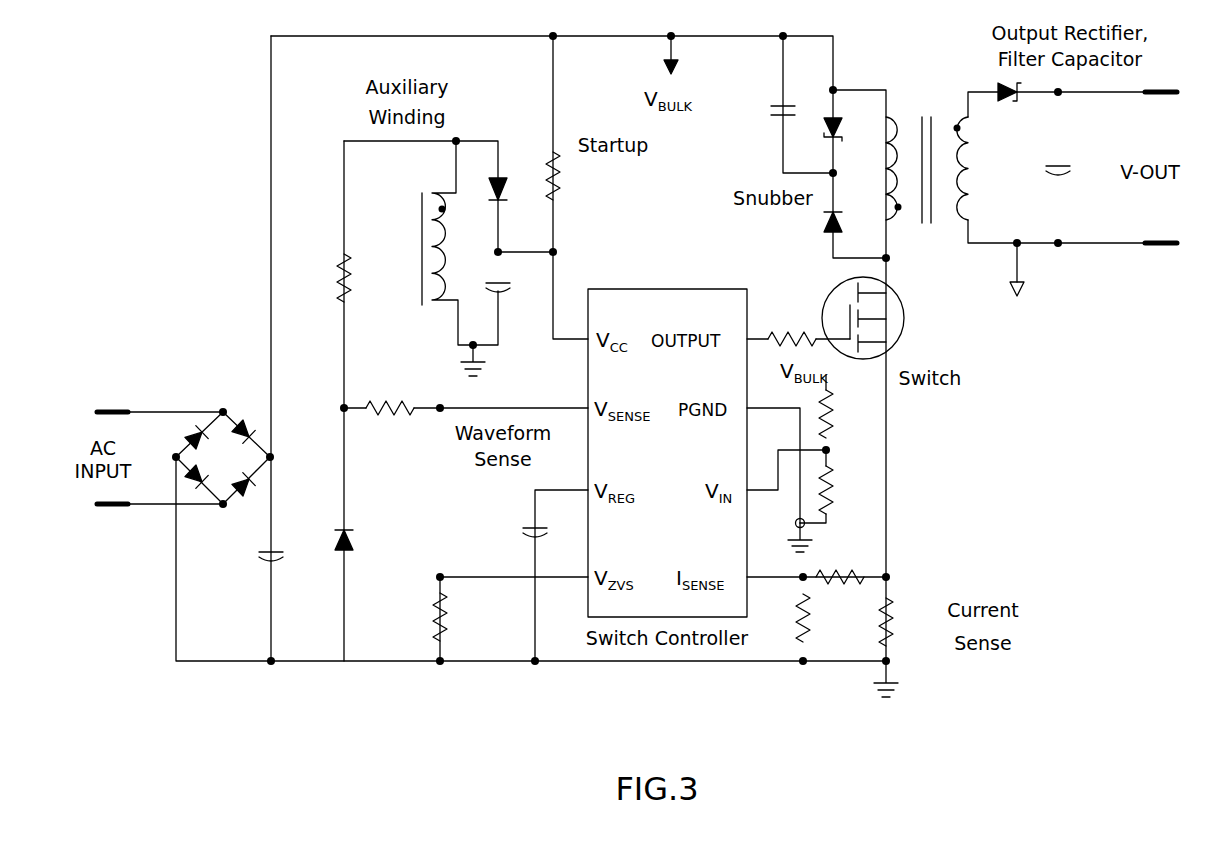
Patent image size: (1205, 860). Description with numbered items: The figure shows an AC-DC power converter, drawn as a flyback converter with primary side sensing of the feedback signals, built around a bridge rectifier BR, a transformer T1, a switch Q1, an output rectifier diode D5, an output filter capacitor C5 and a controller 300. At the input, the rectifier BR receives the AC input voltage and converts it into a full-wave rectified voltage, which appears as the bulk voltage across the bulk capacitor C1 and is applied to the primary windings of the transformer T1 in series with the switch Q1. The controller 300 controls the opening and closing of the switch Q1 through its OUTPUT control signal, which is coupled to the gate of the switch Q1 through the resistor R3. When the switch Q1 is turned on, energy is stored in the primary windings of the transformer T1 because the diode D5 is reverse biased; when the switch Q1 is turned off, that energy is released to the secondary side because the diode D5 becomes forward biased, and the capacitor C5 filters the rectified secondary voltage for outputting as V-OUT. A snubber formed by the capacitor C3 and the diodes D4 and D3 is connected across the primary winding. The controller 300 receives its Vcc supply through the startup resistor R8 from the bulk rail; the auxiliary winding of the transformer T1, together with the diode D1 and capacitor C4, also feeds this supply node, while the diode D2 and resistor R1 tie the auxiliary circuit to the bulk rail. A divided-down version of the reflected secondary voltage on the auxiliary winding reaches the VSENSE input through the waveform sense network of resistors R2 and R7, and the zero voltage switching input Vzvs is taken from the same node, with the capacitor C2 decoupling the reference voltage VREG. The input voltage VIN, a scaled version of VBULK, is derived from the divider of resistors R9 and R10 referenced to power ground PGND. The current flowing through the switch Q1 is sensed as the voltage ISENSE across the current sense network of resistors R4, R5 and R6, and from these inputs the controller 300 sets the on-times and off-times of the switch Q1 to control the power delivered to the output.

The controller 300 is at (661, 289).
The bridge rectifier BR is at (223, 477).
The bulk capacitor C1 is at (286, 572).
The regulator capacitor C2 is at (515, 534).
The snubber capacitor C3 is at (763, 128).
The auxiliary supply capacitor C4 is at (511, 302).
The output filter capacitor C5 is at (1040, 178).
The auxiliary winding diode D1 is at (509, 175).
The diode D2 is at (328, 523).
The snubber diode D3 is at (847, 227).
The snubber zener diode D4 is at (848, 130).
The output rectifier diode D5 is at (1010, 112).
The resistor R1 is at (325, 274).
The waveform sense resistor R2 is at (392, 396).
The gate resistor R3 is at (798, 323).
The resistor R4 is at (787, 621).
The resistor R5 is at (840, 597).
The resistor R6 is at (901, 622).
The waveform sense resistor R7 is at (456, 617).
The startup resistor R8 is at (569, 180).
The input voltage divider resistor R9 is at (839, 406).
The input voltage divider resistor R10 is at (834, 486).
The transformer T1 is at (690, 208).
The switch Q1 is at (881, 318).